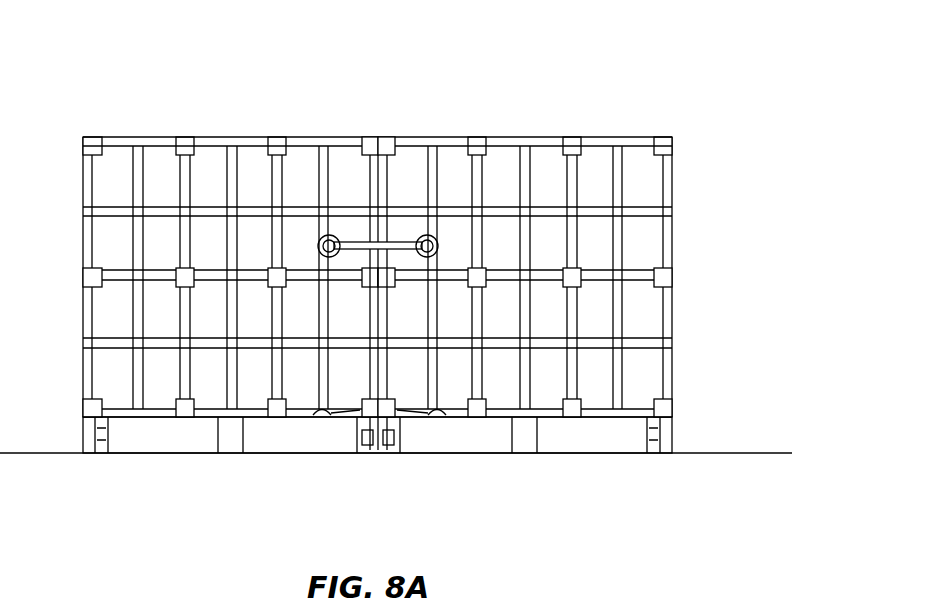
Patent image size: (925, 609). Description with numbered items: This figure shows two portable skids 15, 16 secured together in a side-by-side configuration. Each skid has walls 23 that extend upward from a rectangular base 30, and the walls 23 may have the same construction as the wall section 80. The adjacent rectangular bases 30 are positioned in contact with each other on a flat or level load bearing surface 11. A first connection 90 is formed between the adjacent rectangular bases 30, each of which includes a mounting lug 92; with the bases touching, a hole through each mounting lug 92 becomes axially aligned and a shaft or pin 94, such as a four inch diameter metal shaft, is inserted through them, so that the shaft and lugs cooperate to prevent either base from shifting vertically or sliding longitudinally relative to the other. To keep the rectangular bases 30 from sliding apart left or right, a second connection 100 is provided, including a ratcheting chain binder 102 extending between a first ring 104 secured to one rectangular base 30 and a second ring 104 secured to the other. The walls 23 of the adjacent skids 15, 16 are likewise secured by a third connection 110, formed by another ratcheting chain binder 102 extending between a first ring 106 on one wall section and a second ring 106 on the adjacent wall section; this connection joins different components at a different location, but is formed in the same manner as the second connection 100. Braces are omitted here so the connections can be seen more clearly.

The skid 15 is at (108, 100).
The skid 16 is at (630, 85).
The wall section 80 is at (220, 137).
The wall 23 is at (278, 137).
The third connection 110 is at (398, 222).
The ring 106 is at (325, 235).
The ratcheting chain binder 102 is at (357, 240).
The ring 104 is at (313, 410).
The second connection 100 is at (412, 392).
The load bearing surface 11 is at (743, 452).
The shaft or pin 94 is at (400, 437).
The mounting lug 92 is at (372, 457).
The first connection 90 is at (377, 472).
The rectangular base 30 is at (163, 457).